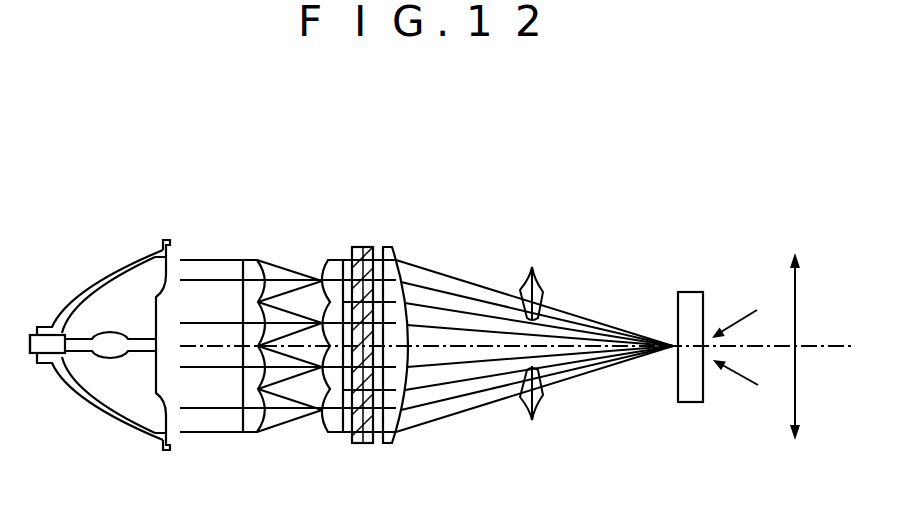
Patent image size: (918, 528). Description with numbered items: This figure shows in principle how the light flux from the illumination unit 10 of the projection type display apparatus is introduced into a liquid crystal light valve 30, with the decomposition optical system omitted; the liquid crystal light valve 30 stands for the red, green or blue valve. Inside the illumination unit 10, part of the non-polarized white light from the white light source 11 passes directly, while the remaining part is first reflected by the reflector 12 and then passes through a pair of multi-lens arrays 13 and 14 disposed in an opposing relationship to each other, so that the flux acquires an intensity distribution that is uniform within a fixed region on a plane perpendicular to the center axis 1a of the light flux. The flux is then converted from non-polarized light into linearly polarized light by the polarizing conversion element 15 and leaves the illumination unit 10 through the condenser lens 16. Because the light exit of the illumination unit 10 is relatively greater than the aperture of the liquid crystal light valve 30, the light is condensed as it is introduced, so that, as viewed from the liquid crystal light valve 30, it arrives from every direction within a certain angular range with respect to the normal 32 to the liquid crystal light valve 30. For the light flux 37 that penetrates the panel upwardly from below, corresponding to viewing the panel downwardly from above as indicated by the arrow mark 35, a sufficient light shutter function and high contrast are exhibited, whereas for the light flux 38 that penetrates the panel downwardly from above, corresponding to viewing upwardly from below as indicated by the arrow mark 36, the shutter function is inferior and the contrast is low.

The illumination unit 10 is at (407, 192).
The center axis 1a is at (202, 344).
The white light source 11 is at (112, 360).
The reflector 12 is at (77, 400).
The multi-lens array 13 is at (248, 433).
The multi-lens array 14 is at (335, 433).
The polarizing conversion element 15 is at (357, 447).
The condenser lens 16 is at (384, 444).
The liquid crystal light valve 30 is at (692, 403).
The normal 32 is at (817, 340).
The arrow mark 35 is at (735, 320).
The arrow mark 36 is at (740, 377).
The light flux 37 is at (532, 412).
The light flux 38 is at (532, 279).